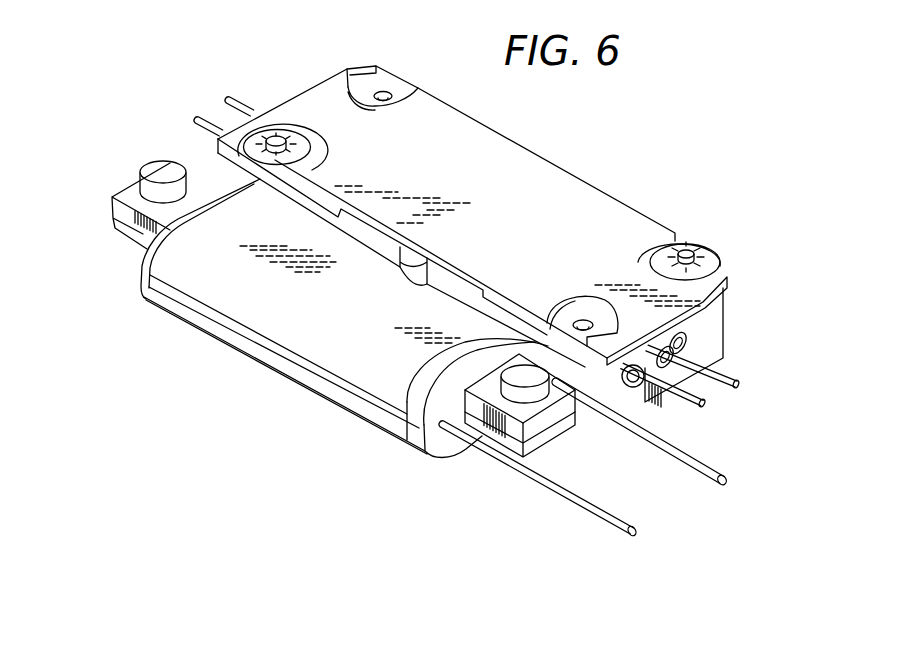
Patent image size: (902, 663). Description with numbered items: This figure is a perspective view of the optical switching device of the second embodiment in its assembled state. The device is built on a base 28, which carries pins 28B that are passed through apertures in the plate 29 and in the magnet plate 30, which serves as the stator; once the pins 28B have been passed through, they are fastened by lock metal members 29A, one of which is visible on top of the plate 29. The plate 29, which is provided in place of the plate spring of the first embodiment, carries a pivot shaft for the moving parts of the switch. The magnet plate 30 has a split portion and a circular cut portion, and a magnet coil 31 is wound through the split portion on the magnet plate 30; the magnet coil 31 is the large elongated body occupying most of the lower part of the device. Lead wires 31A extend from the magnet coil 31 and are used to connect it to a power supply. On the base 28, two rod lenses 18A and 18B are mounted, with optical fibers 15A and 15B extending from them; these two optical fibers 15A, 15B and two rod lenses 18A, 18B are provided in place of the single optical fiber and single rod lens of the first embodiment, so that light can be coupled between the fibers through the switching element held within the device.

The plate 29 is at (568, 198).
The lock metal member 29A is at (718, 257).
The base 28 is at (730, 305).
The pin 28B is at (693, 243).
The rod lens 18A is at (690, 340).
The rod lens 18B is at (606, 381).
The optical fiber 15A is at (741, 383).
The optical fiber 15B is at (693, 406).
The magnet coil 31 is at (272, 350).
The lead wire 31A is at (724, 481).
The magnet plate (stator) 30 is at (507, 428).